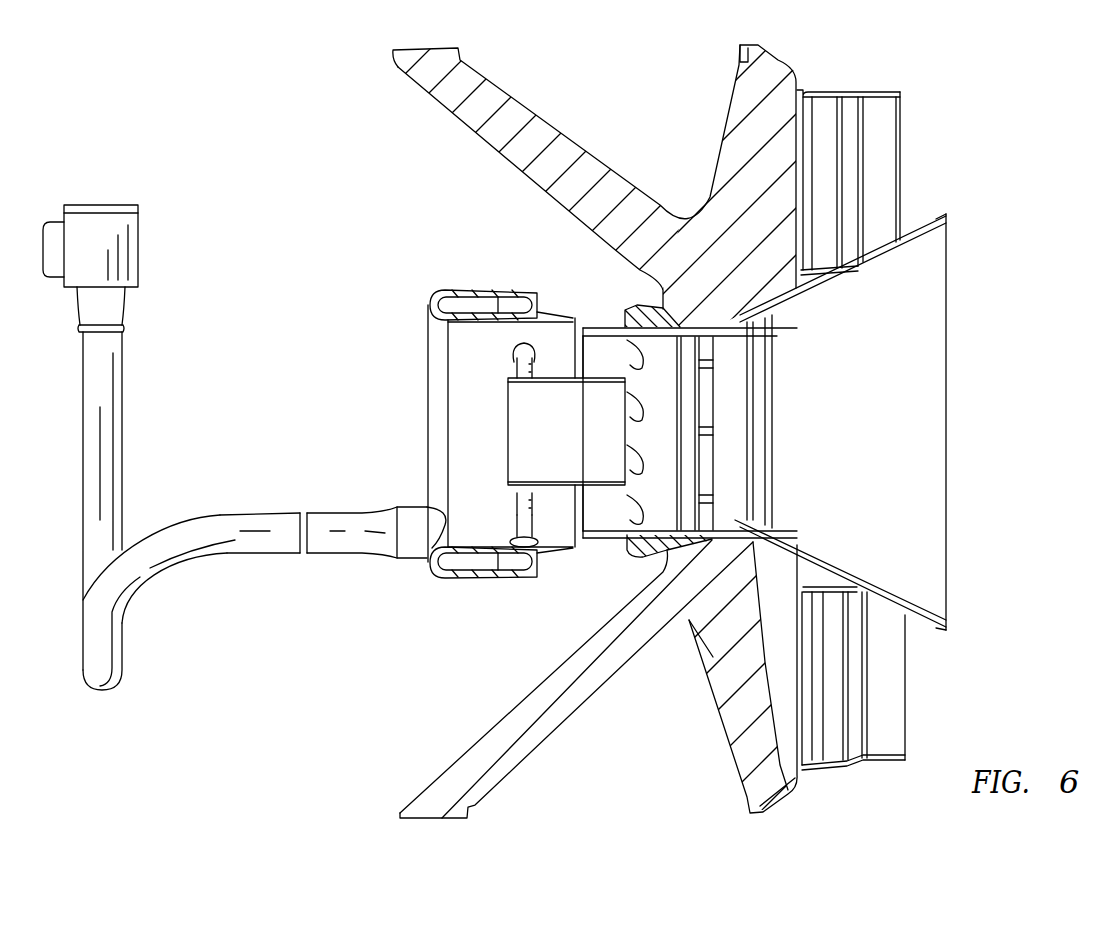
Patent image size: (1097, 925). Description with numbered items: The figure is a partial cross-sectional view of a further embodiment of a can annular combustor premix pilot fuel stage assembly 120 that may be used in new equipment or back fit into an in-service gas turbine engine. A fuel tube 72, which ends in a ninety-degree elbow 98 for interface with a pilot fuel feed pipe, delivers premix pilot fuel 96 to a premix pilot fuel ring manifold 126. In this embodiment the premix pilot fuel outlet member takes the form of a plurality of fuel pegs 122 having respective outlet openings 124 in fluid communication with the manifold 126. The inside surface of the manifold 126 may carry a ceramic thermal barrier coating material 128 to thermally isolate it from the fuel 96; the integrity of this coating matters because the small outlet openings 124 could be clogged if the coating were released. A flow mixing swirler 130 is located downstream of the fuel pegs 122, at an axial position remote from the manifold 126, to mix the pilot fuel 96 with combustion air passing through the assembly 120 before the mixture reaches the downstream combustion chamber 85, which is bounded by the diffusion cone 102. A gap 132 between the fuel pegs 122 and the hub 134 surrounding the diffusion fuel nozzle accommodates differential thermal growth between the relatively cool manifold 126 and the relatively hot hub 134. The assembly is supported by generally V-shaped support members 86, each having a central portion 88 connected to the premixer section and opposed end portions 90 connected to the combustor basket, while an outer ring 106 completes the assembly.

The fuel tube 72 is at (125, 399).
The 90° elbow 98 is at (105, 205).
The can annular combustor premix pilot fuel stage assembly 120 is at (332, 209).
The premix pilot fuel ring manifold 126 is at (455, 292).
The premix pilot fuel 96 is at (470, 307).
The ceramic thermal barrier coating material 128 is at (527, 580).
The outlet openings 124 is at (520, 367).
The hub 134 is at (508, 432).
The gap 132 is at (515, 493).
The fuel pegs 122 is at (517, 513).
The flow mixing swirler 130 is at (618, 350).
The combustion chamber 85 is at (876, 462).
The diffusion cone 102 is at (950, 517).
The outer ring 106 is at (880, 92).
The end portions 90 is at (438, 787).
The central portion 88 is at (708, 598).
The support members 86 is at (560, 738).